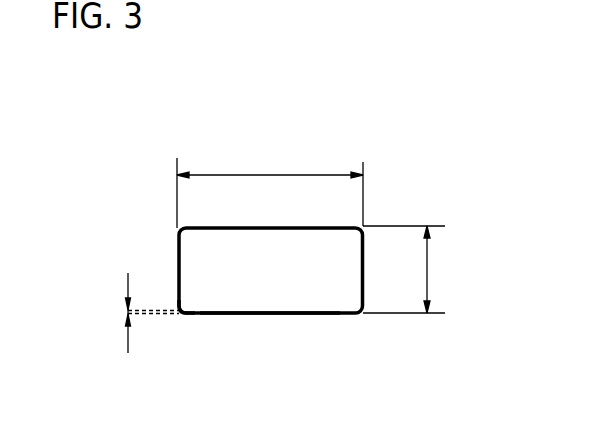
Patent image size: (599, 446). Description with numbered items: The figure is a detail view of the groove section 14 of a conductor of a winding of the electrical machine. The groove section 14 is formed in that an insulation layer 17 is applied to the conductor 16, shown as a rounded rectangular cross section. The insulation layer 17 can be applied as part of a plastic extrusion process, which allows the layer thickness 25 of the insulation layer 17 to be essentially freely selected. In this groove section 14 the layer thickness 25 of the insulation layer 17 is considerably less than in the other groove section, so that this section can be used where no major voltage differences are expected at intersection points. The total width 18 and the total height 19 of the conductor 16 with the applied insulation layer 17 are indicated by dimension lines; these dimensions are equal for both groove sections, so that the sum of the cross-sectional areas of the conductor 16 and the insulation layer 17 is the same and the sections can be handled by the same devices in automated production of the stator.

The groove section 14 is at (183, 315).
The conductor 16 is at (193, 258).
The insulation layer 17 is at (263, 315).
The total width 18 is at (249, 175).
The total height 19 is at (430, 258).
The layer thickness 25 is at (128, 312).